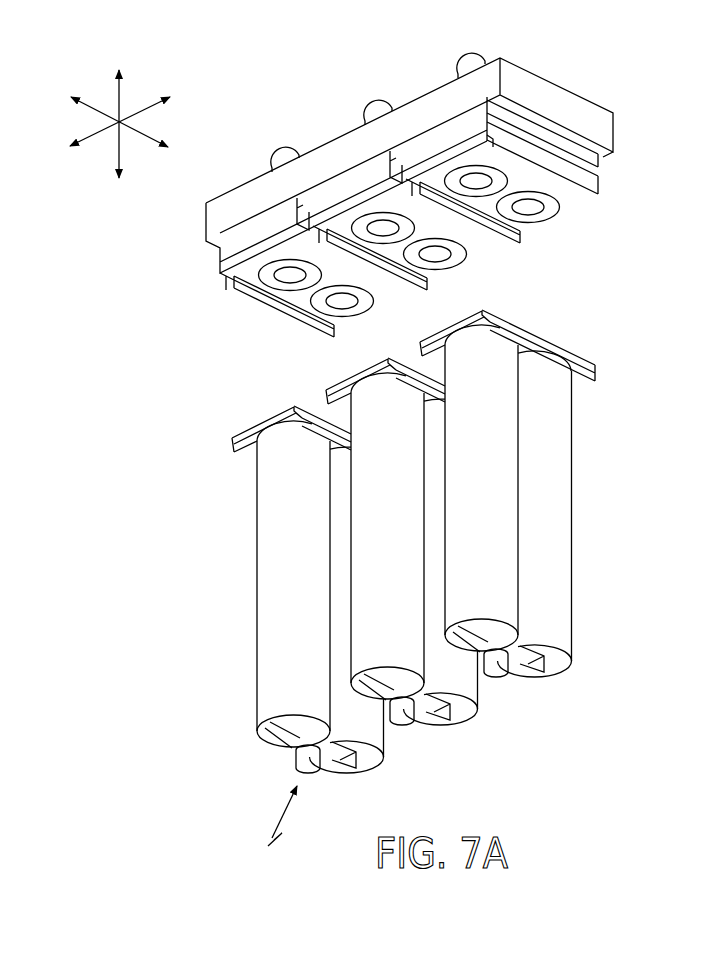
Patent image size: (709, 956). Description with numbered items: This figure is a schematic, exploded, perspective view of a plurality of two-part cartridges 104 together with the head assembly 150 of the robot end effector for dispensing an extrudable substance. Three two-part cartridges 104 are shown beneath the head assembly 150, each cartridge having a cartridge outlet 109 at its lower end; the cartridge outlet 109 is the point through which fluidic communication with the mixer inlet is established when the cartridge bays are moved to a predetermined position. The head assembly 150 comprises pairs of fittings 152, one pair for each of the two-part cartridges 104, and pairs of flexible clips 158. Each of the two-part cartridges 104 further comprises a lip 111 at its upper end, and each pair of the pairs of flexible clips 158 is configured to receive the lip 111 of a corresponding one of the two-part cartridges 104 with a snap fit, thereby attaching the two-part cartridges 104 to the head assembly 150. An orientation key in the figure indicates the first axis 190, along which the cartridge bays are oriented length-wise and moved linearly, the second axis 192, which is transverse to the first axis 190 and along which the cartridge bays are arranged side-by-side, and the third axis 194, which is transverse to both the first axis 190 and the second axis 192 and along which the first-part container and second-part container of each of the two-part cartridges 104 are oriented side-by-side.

The first axis 190 is at (121, 90).
The second axis 192 is at (142, 106).
The third axis 194 is at (101, 110).
The head assembly 150 is at (205, 228).
The pairs of fittings 152 is at (289, 150).
The pairs of flexible clips 158 is at (237, 290).
The lip 111 is at (238, 436).
The two-part cartridges 104 is at (578, 509).
The cartridge outlet 109 is at (273, 828).